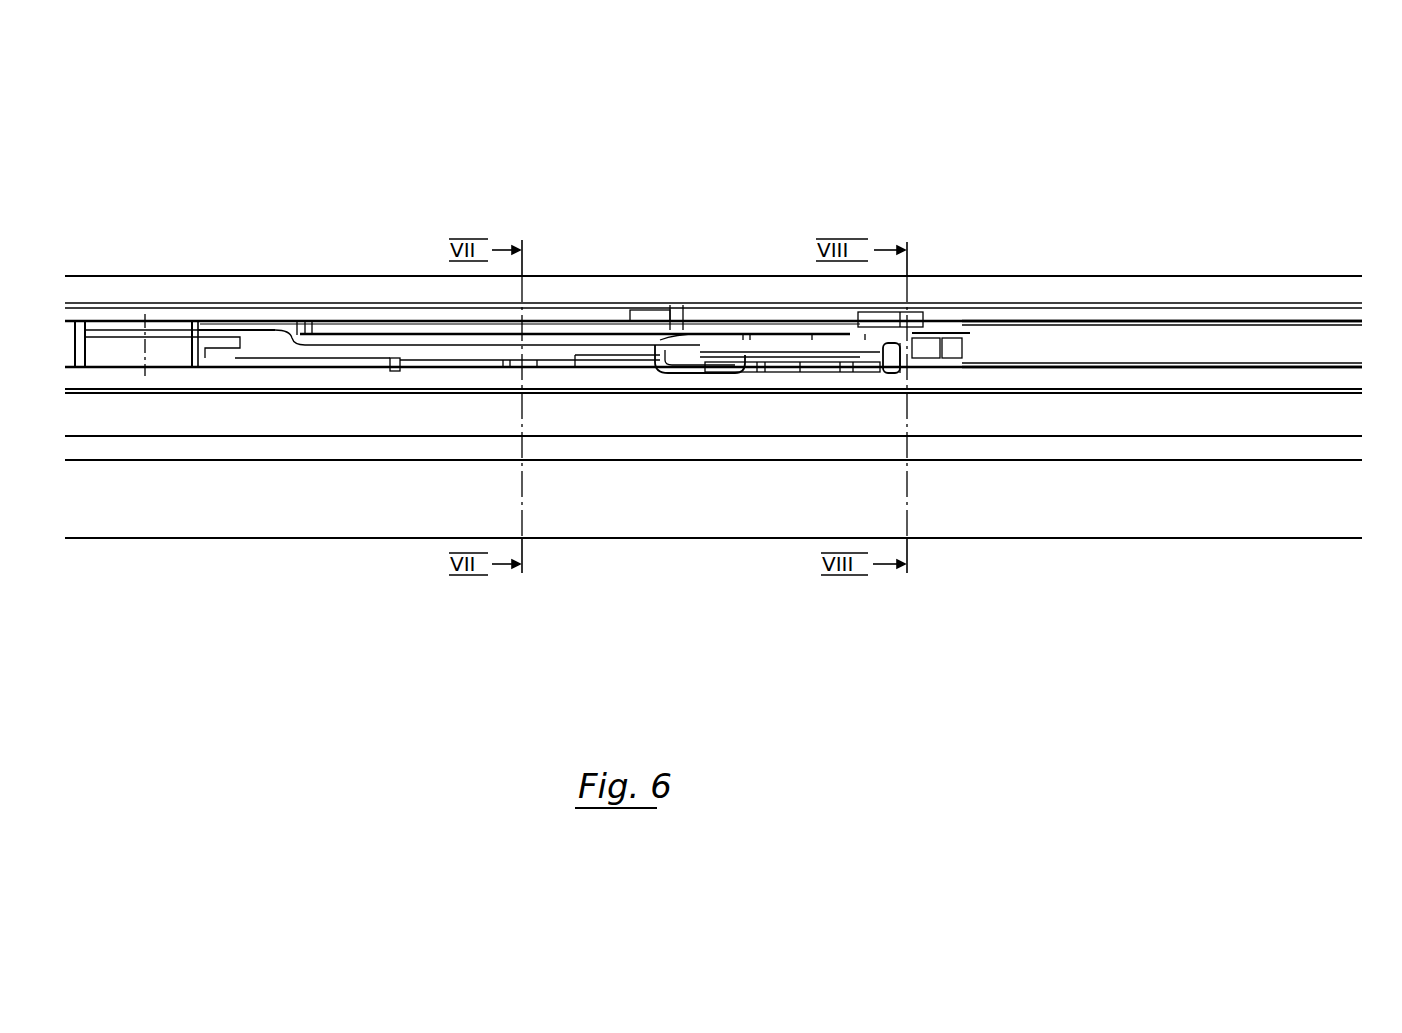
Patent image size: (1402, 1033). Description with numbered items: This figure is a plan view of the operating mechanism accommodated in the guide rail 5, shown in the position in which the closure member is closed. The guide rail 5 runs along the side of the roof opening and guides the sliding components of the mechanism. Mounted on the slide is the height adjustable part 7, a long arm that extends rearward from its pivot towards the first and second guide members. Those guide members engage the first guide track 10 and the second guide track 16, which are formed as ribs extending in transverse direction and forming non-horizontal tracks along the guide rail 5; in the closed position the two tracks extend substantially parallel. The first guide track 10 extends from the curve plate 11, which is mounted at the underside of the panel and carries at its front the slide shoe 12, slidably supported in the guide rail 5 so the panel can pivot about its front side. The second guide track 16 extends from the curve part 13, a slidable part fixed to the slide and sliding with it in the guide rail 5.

The guide rail 5 is at (1182, 337).
The height adjustable part 7 is at (815, 368).
The first guide track 10 is at (929, 344).
The curve plate 11 is at (622, 343).
The slide shoe 12 is at (119, 350).
The curve part 13 is at (453, 367).
The second guide track 16 is at (960, 344).